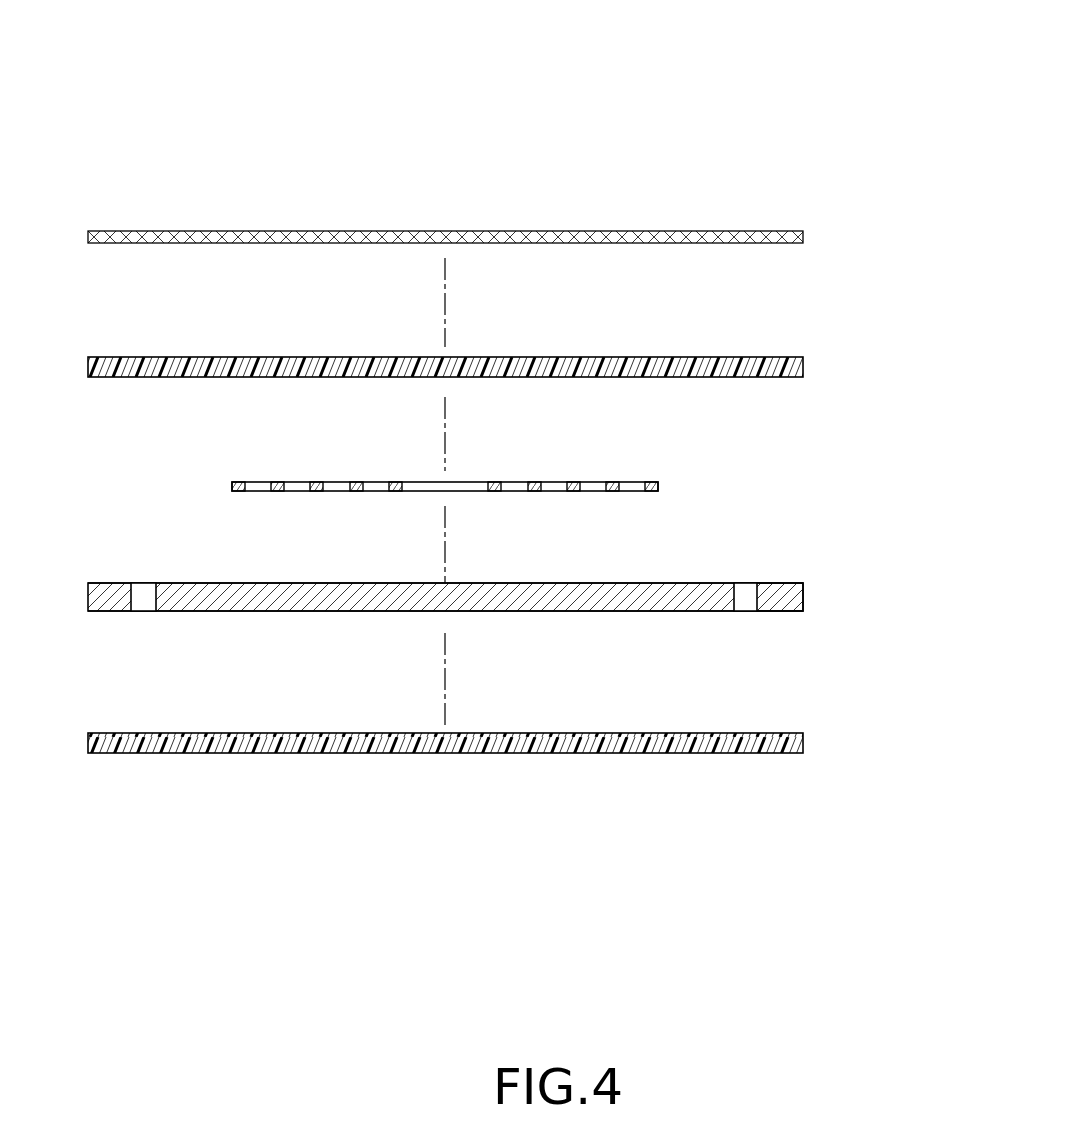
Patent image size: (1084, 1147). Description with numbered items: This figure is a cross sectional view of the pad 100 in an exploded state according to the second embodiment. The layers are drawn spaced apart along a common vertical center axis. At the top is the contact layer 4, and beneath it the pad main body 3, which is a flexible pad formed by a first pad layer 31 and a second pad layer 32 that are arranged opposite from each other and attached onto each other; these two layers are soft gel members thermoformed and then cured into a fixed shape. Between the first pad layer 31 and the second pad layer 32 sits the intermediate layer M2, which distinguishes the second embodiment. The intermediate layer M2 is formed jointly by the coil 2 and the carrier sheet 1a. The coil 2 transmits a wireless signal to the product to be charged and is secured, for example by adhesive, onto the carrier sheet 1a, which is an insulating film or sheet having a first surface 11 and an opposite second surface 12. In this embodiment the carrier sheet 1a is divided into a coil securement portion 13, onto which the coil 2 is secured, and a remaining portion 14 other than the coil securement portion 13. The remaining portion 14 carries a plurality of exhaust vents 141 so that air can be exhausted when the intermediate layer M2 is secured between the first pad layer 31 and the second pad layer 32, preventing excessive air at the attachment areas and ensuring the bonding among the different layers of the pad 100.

The pad 100 is at (491, 41).
The contact layer 4 is at (626, 238).
The pad main body 3 is at (470, 544).
The first pad layer 31 is at (633, 367).
The second pad layer 32 is at (632, 737).
The coil 2 is at (665, 482).
The intermediate layer M2 is at (833, 399).
The carrier sheet 1a is at (488, 598).
The first surface 11 is at (676, 583).
The second surface 12 is at (648, 611).
The coil securement portion 13 is at (543, 597).
The remaining portion 14 is at (792, 598).
The exhaust vent 141 is at (738, 605).